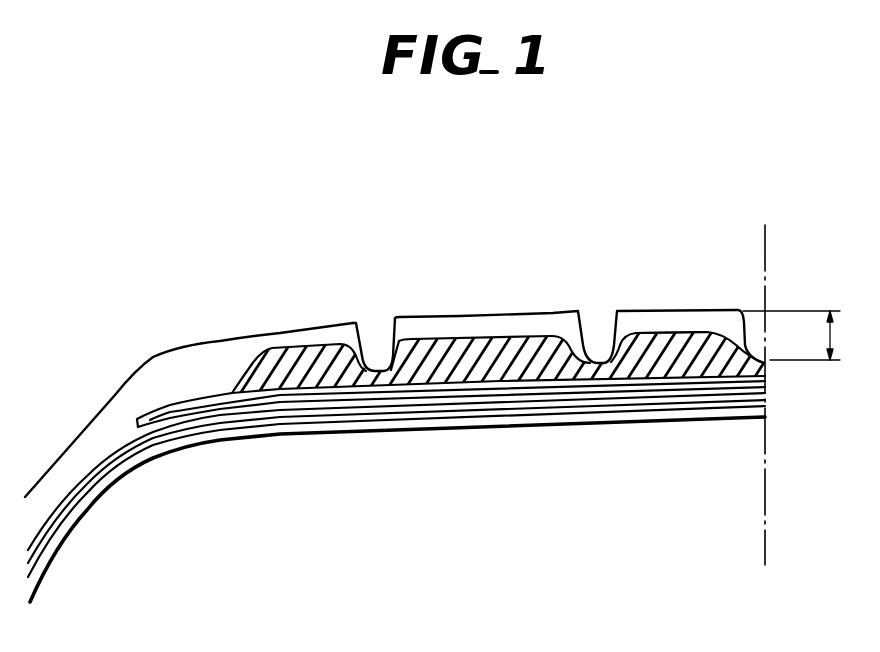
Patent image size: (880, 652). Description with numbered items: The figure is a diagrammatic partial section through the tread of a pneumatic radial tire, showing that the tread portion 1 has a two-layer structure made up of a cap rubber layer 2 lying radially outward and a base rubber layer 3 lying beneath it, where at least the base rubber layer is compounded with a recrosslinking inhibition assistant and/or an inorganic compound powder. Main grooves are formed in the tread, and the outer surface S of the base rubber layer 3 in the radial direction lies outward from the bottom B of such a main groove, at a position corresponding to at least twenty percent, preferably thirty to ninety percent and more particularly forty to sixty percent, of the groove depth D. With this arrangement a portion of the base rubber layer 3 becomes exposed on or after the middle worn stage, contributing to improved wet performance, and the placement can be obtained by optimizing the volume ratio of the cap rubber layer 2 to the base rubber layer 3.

The tread portion 1 is at (643, 310).
The cap rubber layer 2 is at (462, 317).
The base rubber layer 3 is at (507, 347).
The outer surface of the base rubber layer S is at (690, 333).
The bottom of a main groove B is at (765, 362).
The depth of the main groove D is at (798, 335).